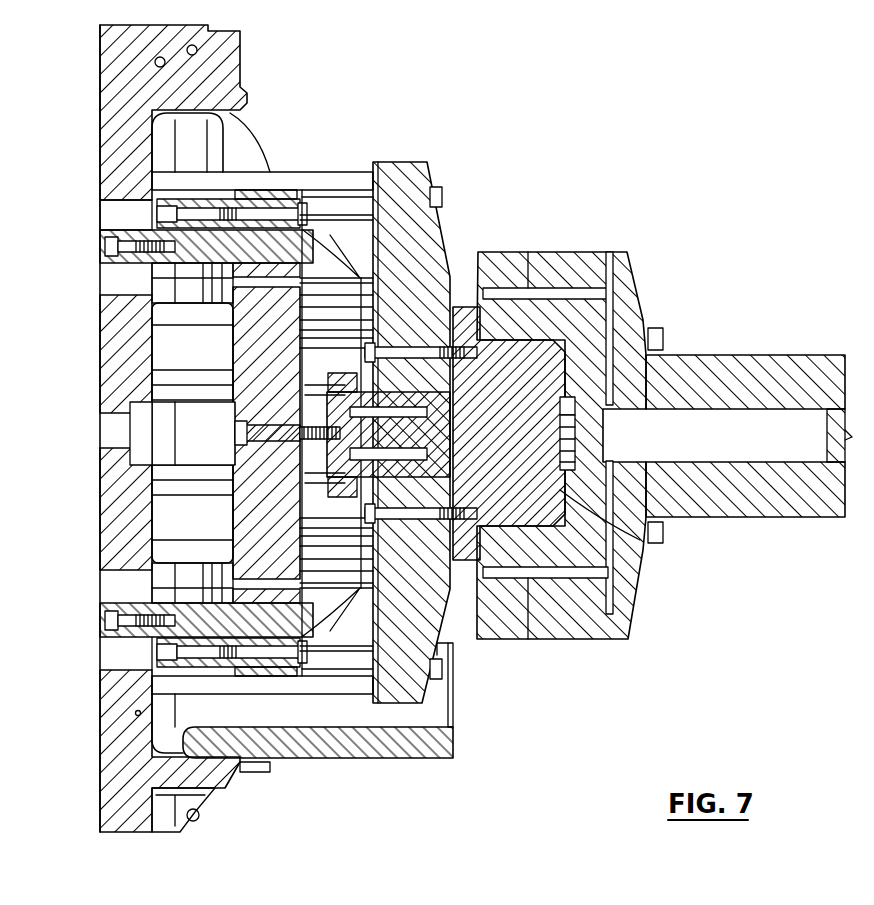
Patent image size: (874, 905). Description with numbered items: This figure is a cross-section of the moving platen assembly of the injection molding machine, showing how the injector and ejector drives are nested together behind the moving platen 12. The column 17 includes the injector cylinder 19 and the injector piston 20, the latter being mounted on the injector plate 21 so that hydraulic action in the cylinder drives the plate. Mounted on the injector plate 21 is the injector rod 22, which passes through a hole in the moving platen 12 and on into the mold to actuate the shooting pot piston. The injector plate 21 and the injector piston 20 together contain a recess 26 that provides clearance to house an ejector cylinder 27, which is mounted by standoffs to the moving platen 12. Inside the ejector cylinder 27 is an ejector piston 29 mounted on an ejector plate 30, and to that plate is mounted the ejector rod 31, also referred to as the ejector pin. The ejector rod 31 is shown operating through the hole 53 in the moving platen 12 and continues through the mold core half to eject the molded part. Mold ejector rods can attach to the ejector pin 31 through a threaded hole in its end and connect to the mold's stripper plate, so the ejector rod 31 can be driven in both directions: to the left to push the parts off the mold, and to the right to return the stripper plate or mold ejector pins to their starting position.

The moving platen 12 is at (218, 63).
The column 17 is at (712, 368).
The injector cylinder 19 is at (665, 530).
The injector piston 20 is at (615, 558).
The injector plate 21 is at (405, 170).
The injector rod 22 is at (315, 185).
The recess 26 is at (575, 430).
The ejector cylinder 27 is at (572, 406).
The ejector piston 29 is at (440, 440).
The ejector plate 30 is at (257, 490).
The ejector rod 31 is at (157, 223).
The hole 53 is at (113, 207).